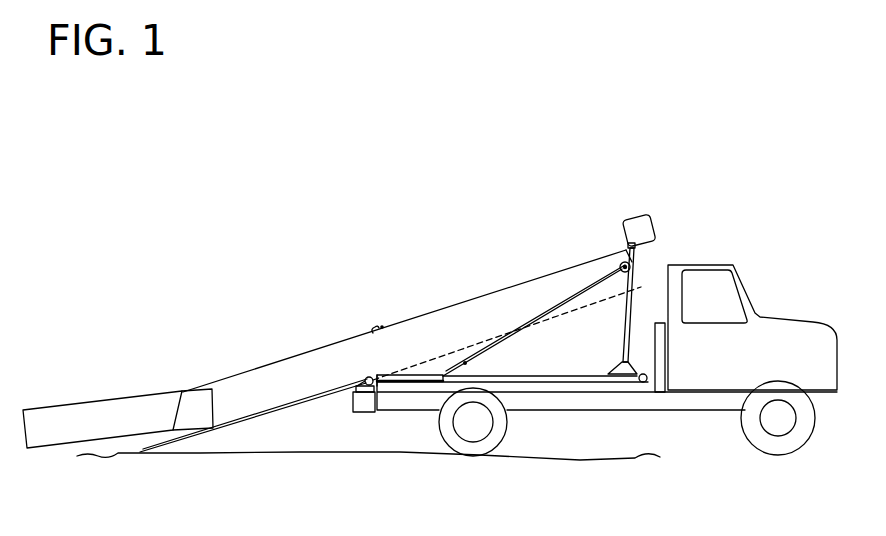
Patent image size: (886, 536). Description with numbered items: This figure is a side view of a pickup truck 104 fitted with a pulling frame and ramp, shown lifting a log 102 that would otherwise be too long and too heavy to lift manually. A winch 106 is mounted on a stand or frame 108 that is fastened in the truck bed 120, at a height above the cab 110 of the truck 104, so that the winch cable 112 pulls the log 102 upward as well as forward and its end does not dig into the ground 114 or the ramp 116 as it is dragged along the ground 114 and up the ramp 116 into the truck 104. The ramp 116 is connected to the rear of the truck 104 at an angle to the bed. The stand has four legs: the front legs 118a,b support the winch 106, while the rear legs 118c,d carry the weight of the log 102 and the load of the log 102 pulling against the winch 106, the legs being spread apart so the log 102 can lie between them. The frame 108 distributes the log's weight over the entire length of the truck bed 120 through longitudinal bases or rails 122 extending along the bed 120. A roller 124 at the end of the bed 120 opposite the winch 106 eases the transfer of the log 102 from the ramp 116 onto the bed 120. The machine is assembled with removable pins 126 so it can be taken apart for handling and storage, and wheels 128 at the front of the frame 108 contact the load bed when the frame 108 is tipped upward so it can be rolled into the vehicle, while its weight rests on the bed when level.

The log 102 is at (125, 405).
The pickup truck 104 is at (411, 248).
The winch 106 is at (648, 223).
The frame 108 is at (633, 280).
The cab 110 is at (717, 268).
The winch cable 112 is at (502, 284).
The ground 114 is at (193, 455).
The ramp 116 is at (287, 408).
The front legs 118a,b is at (623, 313).
The rear legs 118c,d is at (497, 345).
The truck bed 120 is at (556, 389).
The rails 122 is at (607, 380).
The roller 124 is at (366, 379).
The removable pins 126 is at (465, 362).
The wheels 128 is at (657, 381).